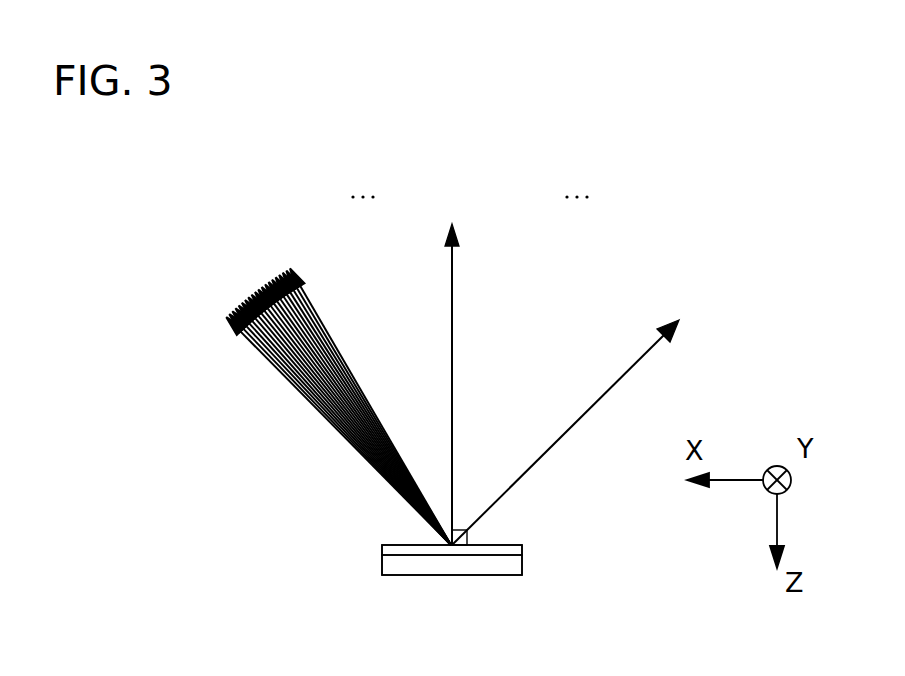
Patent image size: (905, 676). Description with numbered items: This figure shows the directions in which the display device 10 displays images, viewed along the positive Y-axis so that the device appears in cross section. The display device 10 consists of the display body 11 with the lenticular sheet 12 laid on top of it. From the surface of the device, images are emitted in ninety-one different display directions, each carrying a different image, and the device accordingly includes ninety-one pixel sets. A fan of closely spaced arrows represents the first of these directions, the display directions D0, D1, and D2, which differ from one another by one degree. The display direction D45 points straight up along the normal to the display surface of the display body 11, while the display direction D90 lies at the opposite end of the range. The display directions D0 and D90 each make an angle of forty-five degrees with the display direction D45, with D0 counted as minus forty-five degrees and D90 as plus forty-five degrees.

The display device 10 is at (612, 518).
The display body 11 is at (522, 566).
The lenticular sheet 12 is at (522, 548).
The display direction D0 is at (227, 318).
The display direction D1 is at (230, 315).
The display direction D2 is at (233, 311).
The display direction D45 is at (452, 224).
The display direction D90 is at (681, 318).